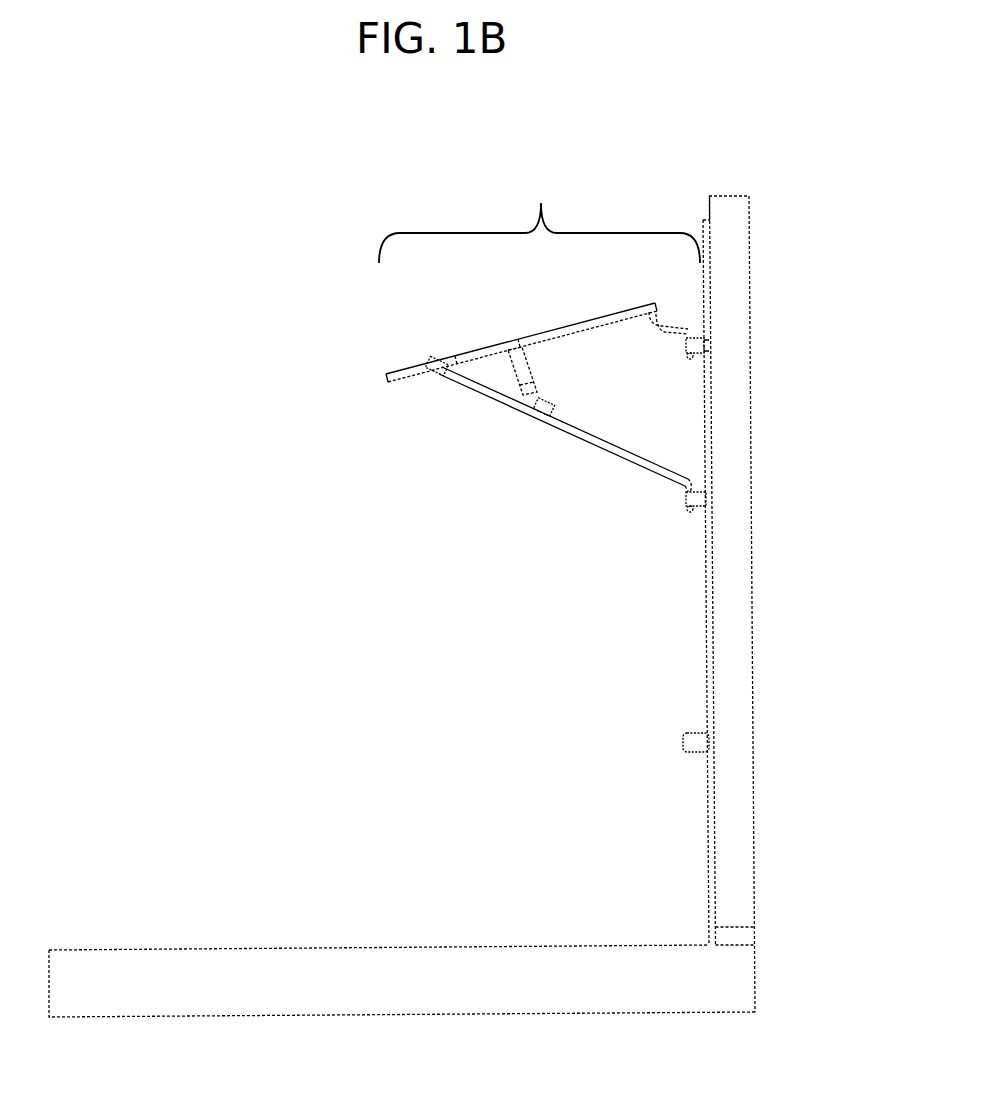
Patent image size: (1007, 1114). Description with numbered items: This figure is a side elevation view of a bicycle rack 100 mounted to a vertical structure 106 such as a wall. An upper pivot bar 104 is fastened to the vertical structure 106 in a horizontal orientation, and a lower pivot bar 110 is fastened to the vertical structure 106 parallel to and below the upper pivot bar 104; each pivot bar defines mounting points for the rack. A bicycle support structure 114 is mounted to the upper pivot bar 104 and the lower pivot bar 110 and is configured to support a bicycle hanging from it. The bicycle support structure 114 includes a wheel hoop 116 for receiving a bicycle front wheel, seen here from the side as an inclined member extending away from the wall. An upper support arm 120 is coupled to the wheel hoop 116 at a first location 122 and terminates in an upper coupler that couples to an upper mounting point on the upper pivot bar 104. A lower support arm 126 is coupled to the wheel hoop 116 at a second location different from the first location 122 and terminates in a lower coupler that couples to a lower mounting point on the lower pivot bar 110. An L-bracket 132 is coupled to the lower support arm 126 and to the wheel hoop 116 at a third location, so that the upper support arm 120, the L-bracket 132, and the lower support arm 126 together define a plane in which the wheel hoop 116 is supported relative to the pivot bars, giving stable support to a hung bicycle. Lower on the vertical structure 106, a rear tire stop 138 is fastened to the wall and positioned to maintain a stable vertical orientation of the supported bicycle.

The bicycle rack 100 is at (190, 131).
The upper pivot bar 104 is at (695, 357).
The vertical structure 106 is at (711, 868).
The lower pivot bar 110 is at (691, 510).
The bicycle support structure 114 is at (539, 219).
The wheel hoop 116 is at (531, 331).
The upper support arm 120 is at (652, 330).
The first location 122 is at (692, 337).
The lower support arm 126 is at (598, 438).
The L-bracket 132 is at (528, 368).
The rear tire stop 138 is at (683, 742).